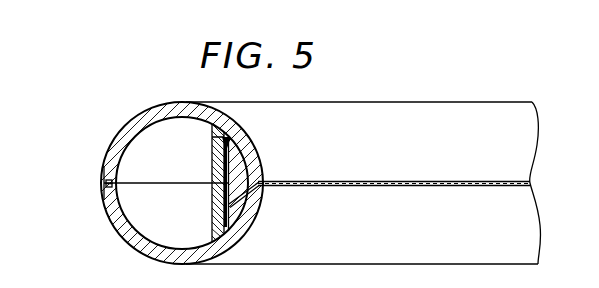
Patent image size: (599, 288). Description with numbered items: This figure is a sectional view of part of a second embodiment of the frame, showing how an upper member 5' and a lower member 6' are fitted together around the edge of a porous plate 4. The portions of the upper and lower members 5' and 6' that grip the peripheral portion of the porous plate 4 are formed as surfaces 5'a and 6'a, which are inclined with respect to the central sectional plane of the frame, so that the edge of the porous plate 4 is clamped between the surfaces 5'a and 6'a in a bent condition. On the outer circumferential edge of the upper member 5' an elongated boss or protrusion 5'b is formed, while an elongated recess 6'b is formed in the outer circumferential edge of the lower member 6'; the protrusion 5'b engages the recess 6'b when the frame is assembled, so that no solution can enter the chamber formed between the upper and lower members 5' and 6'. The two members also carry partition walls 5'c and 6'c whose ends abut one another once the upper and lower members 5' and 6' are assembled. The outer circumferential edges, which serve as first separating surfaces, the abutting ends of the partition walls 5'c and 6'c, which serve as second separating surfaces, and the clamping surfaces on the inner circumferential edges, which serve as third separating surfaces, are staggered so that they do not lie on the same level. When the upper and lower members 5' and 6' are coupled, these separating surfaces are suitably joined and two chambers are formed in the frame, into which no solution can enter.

The upper member 5' is at (220, 178).
The lower member 6' is at (220, 182).
The elongated boss or protrusion 5'b is at (77, 159).
The elongated recess 6'b is at (87, 201).
The partition wall 5'c is at (191, 153).
The partition wall 6'c is at (191, 212).
The inclined clamping surface 5'a is at (237, 182).
The inclined clamping surface 6'a is at (237, 182).
The porous plate 4 is at (313, 182).